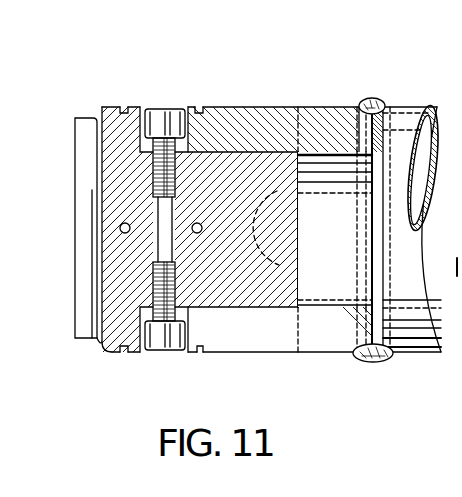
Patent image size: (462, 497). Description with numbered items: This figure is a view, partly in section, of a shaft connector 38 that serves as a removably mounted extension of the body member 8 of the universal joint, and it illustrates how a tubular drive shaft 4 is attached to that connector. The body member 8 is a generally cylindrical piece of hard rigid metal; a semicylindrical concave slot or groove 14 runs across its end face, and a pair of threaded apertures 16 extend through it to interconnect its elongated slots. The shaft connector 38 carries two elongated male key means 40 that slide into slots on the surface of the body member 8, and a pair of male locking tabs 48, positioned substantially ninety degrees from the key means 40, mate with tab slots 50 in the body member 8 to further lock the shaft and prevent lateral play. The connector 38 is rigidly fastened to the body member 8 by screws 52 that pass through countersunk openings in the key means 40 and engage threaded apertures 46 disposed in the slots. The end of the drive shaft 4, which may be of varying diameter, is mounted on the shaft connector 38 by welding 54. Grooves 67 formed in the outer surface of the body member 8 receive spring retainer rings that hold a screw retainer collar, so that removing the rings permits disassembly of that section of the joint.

The drive shaft 4 is at (414, 107).
The body member 8 is at (106, 356).
The concave slot or groove 14 is at (90, 150).
The threaded apertures 16 is at (120, 226).
The shaft connector 38 is at (323, 96).
The male key means 40 is at (233, 107).
The threaded apertures 46 is at (176, 172).
The male locking tabs 48 is at (276, 209).
The tab slots 50 is at (260, 250).
The screws 52 is at (164, 120).
The welding 54 is at (371, 99).
The grooves 67 is at (122, 107).